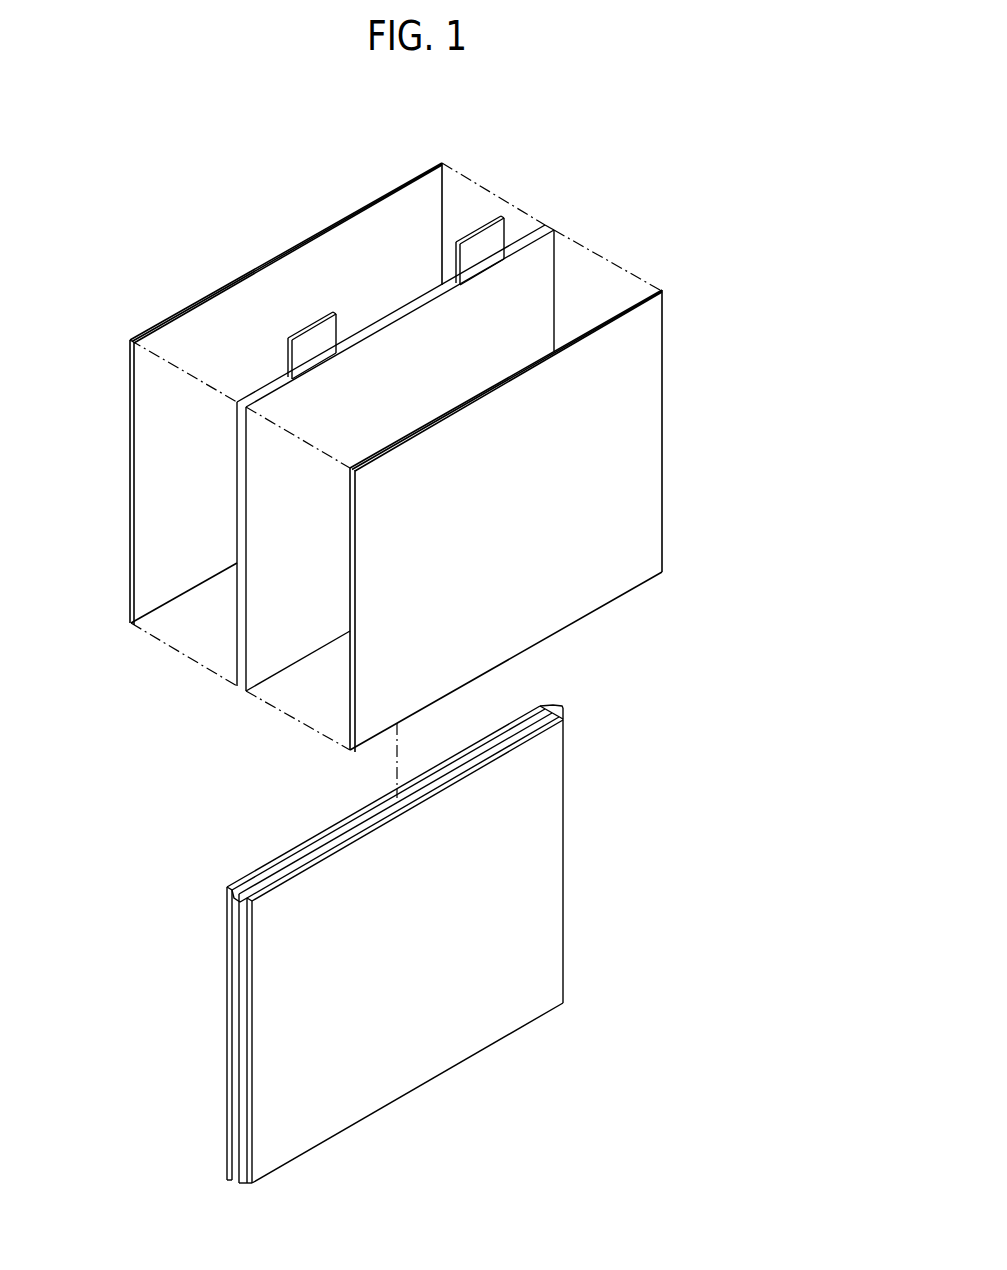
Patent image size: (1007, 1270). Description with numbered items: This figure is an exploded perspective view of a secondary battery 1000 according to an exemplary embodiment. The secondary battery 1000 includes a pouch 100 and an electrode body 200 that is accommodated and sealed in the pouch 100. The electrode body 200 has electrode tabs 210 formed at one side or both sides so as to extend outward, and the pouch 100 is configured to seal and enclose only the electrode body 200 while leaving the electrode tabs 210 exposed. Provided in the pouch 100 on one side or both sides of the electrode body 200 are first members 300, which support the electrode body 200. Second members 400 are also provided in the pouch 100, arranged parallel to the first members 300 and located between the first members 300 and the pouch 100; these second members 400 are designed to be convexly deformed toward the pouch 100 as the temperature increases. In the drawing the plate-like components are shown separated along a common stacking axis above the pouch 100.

The secondary battery 1000 is at (701, 220).
The pouch 100 is at (548, 827).
The electrode body 200 is at (540, 263).
The electrode tab 210 is at (313, 338).
The first member 300 is at (430, 183).
The second member 400 is at (397, 182).